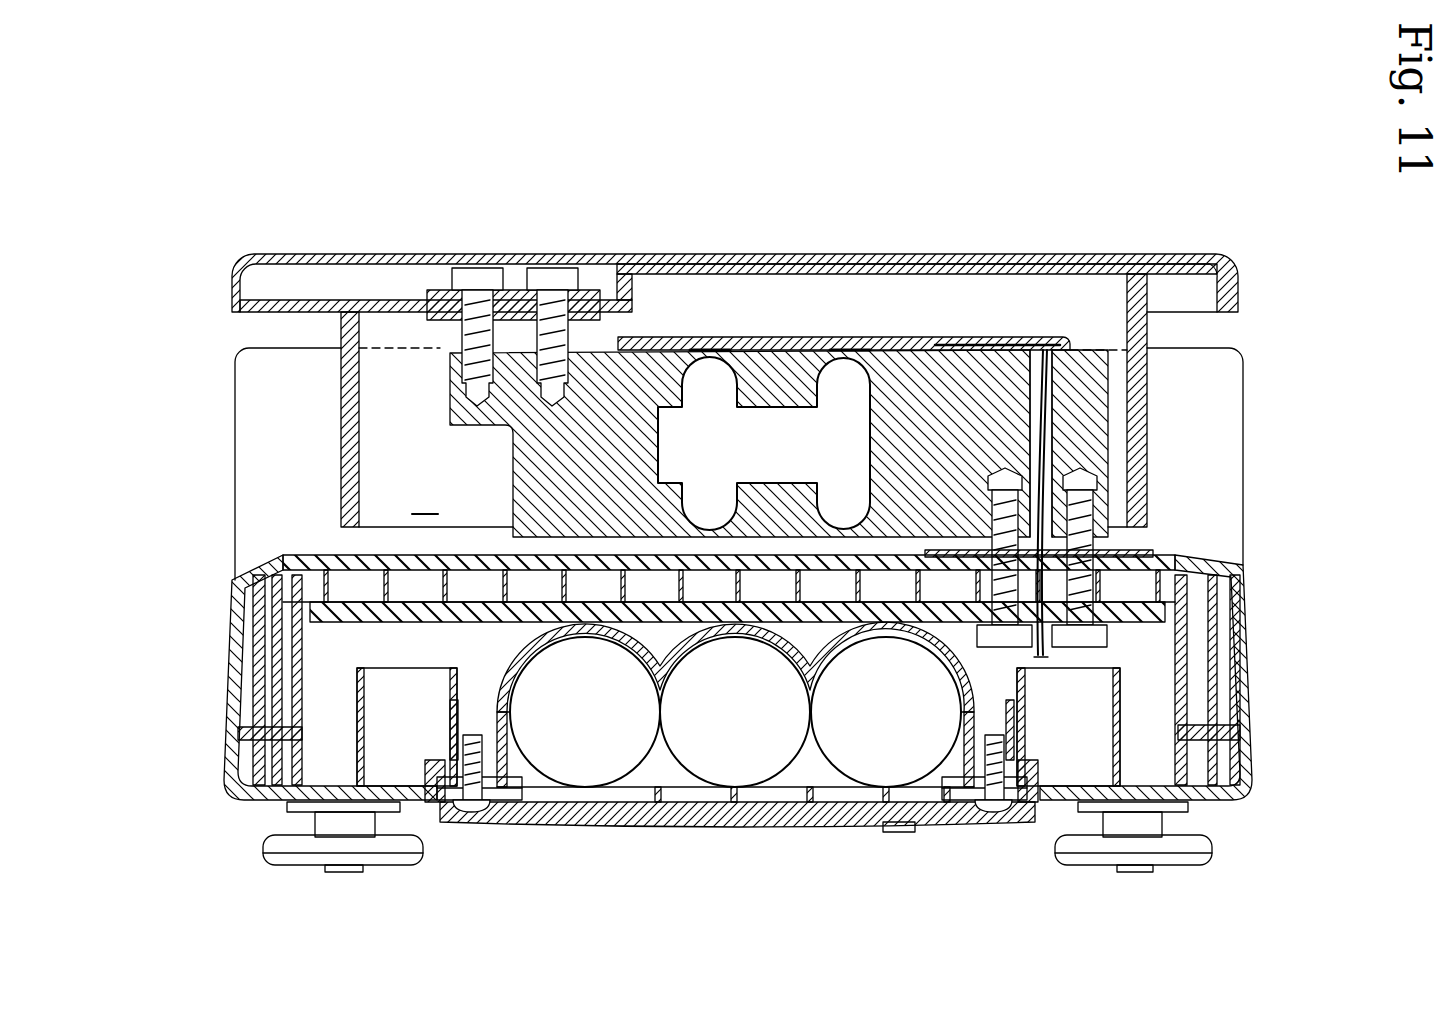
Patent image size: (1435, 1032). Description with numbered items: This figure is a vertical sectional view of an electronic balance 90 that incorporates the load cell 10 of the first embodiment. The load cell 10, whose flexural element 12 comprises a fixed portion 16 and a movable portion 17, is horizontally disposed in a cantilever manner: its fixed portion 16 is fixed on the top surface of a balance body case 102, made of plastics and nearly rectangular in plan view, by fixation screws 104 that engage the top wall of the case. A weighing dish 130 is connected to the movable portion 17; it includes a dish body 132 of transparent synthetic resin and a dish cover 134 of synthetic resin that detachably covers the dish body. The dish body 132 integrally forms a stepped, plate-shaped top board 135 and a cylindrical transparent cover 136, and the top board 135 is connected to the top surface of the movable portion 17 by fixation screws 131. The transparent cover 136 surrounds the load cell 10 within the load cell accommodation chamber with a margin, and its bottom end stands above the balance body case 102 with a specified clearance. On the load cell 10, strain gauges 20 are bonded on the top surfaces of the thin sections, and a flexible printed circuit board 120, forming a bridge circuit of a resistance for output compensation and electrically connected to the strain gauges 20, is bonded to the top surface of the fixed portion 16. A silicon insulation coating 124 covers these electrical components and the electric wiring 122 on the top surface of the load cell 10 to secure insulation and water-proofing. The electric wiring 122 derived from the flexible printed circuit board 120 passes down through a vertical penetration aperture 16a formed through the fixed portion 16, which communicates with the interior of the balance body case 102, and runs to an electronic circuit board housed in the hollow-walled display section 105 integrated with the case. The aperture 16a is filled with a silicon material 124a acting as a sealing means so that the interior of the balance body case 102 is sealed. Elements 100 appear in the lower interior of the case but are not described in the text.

The electronic balance 90 is at (696, 238).
The weighing dish 130 is at (735, 219).
The dish cover 134 is at (824, 256).
The dish body 132 is at (792, 168).
The top board 135 is at (270, 312).
The fixation screws 131 is at (548, 266).
The silicon insulation coating 124 is at (647, 332).
The load cell 10 is at (719, 371).
The movable portion 17 is at (522, 450).
The strain gauges 20 is at (710, 349).
The flexible printed circuit board 120 is at (965, 336).
The flexural element 12 is at (1099, 343).
The fixed portion 16 is at (1108, 396).
The silicon material 124a is at (1052, 425).
The vertical penetration aperture 16a is at (1052, 445).
The display section 105 is at (232, 405).
The transparent cover 136 is at (341, 450).
The balance body case 102 is at (245, 662).
The rollers 100 is at (835, 540).
The fixation screws 104 is at (1008, 632).
The electric wiring 122 is at (1046, 657).